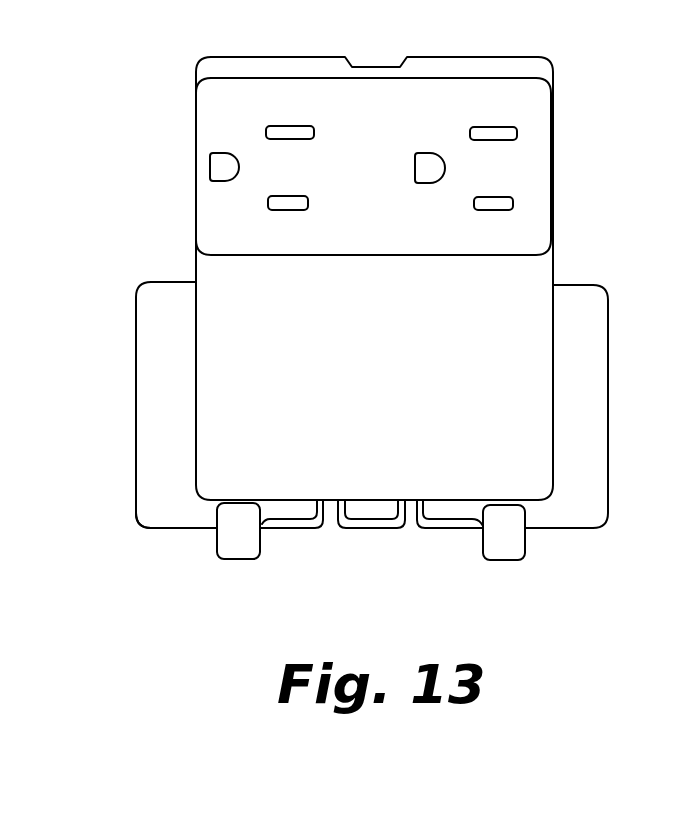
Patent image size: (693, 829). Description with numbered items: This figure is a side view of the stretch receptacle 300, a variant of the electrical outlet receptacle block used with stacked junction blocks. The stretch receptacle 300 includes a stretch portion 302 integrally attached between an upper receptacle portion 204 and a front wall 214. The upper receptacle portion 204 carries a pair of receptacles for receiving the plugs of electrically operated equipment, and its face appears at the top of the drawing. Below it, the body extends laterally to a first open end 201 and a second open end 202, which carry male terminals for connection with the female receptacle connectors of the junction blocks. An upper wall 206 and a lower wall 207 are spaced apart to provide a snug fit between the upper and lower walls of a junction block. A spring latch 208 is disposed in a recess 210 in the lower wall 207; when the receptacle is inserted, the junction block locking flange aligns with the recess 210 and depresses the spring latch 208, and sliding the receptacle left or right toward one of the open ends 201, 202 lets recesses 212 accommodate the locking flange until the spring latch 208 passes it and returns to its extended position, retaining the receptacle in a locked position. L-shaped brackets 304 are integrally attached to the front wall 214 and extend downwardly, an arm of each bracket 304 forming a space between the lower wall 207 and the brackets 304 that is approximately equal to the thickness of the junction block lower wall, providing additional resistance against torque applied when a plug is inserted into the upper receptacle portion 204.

The stretch receptacle 300 is at (358, 334).
The stretch portion 302 is at (392, 322).
The upper receptacle portion 204 is at (196, 180).
The upper wall 206 is at (358, 415).
The first open end 201 is at (136, 407).
The second open end 202 is at (609, 397).
The front wall 214 is at (142, 485).
The lower wall 207 is at (155, 530).
The spring latch 208 is at (372, 530).
The recess 210 is at (332, 520).
The recesses 212 is at (295, 531).
The L-shaped brackets 304 is at (230, 552).